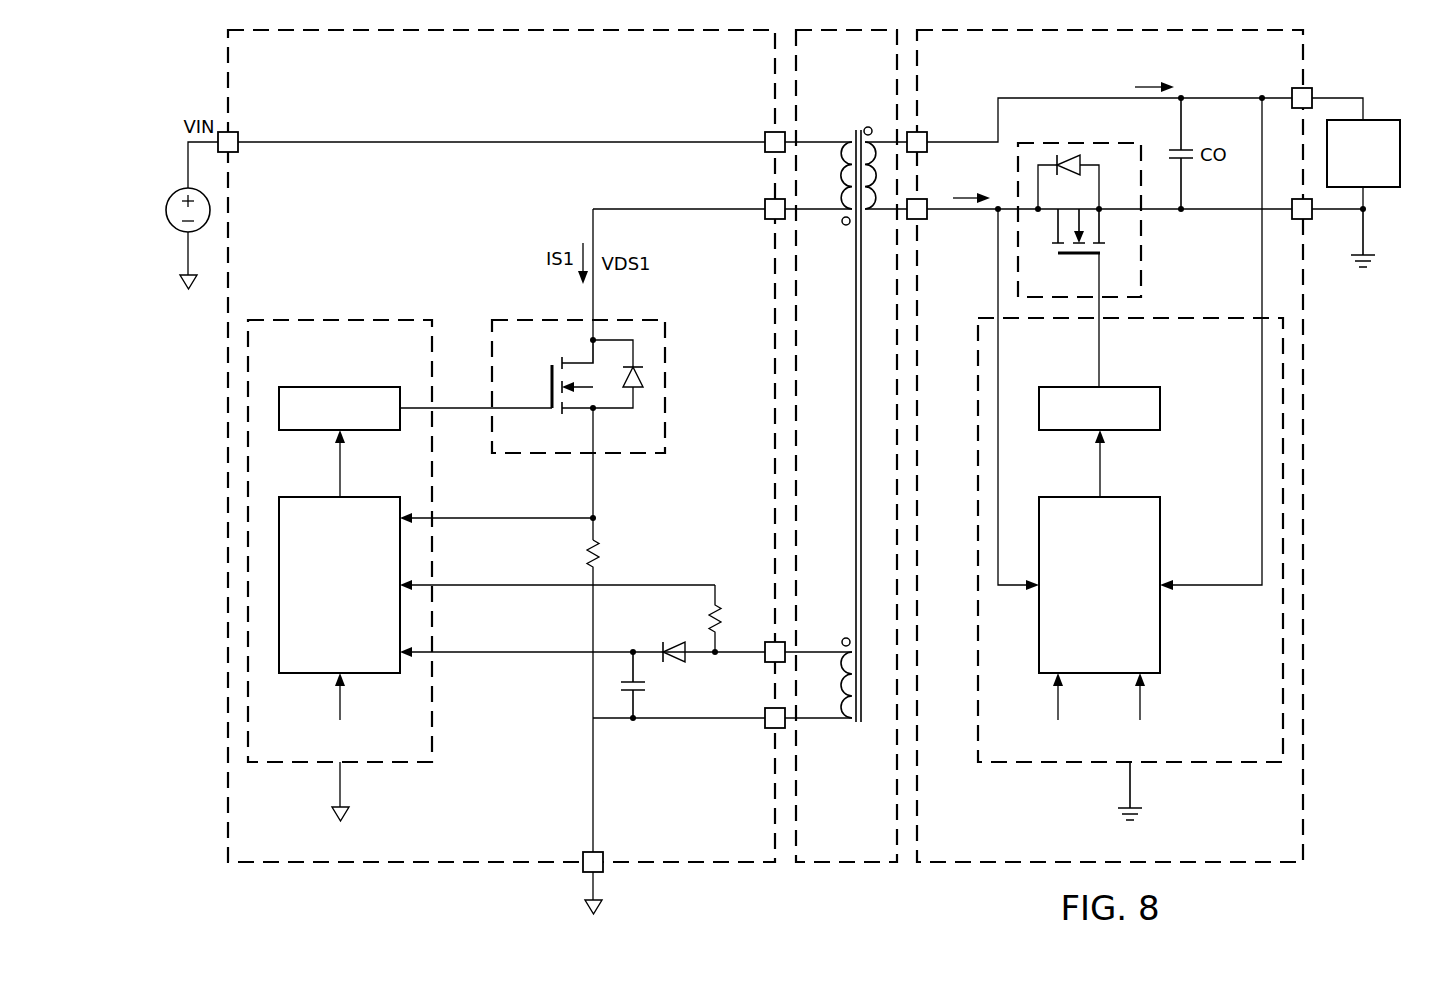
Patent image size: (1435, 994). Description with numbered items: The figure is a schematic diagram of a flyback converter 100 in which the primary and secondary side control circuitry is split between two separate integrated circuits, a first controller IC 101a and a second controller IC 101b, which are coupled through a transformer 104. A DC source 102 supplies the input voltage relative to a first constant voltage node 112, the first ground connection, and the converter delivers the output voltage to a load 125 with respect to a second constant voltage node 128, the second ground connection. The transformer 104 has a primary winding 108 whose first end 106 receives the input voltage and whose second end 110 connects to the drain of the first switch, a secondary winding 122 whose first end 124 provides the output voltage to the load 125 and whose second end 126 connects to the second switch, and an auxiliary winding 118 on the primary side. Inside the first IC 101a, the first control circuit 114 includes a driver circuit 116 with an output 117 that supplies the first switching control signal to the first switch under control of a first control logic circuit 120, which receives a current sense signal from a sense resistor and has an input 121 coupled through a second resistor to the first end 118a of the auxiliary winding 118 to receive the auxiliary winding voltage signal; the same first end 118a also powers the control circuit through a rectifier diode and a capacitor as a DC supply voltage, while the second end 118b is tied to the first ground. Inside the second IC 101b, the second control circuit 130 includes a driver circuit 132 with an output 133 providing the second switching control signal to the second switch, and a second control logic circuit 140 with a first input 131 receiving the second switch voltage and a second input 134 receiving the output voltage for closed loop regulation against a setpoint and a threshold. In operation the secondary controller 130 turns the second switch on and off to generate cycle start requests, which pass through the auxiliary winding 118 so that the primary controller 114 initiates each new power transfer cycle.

The flyback converter 100 is at (1352, 856).
The first controller IC 101a is at (468, 843).
The second controller IC 101b is at (986, 841).
The DC source 102 is at (176, 192).
The transformer 104 is at (870, 876).
The first end of primary winding 106 is at (503, 139).
The primary winding 108 is at (836, 246).
The second end of primary winding 110 is at (680, 207).
The first constant voltage node 112 is at (186, 250).
The first control circuit 114 is at (303, 308).
The driver circuit 116 is at (322, 432).
The output of driver circuit 117 is at (476, 412).
The auxiliary winding 118 is at (834, 618).
The first end of auxiliary winding 118a is at (756, 656).
The second end of auxiliary winding 118b is at (704, 722).
The first control logic circuit 120 is at (322, 629).
The input of first control logic circuit 121 is at (474, 592).
The secondary winding 122 is at (846, 388).
The first end of secondary winding 124 is at (996, 118).
The load 125 is at (1370, 118).
The second end of secondary winding 126 is at (982, 216).
The second constant voltage node 128 is at (1366, 236).
The second control circuit 130 is at (1208, 306).
The first input of second control logic circuit 131 is at (1012, 592).
The driver circuit 132 is at (1162, 408).
The output of driver circuit 133 is at (1097, 354).
The second input of second control logic circuit 134 is at (1214, 592).
The second control logic circuit 140 is at (1082, 629).